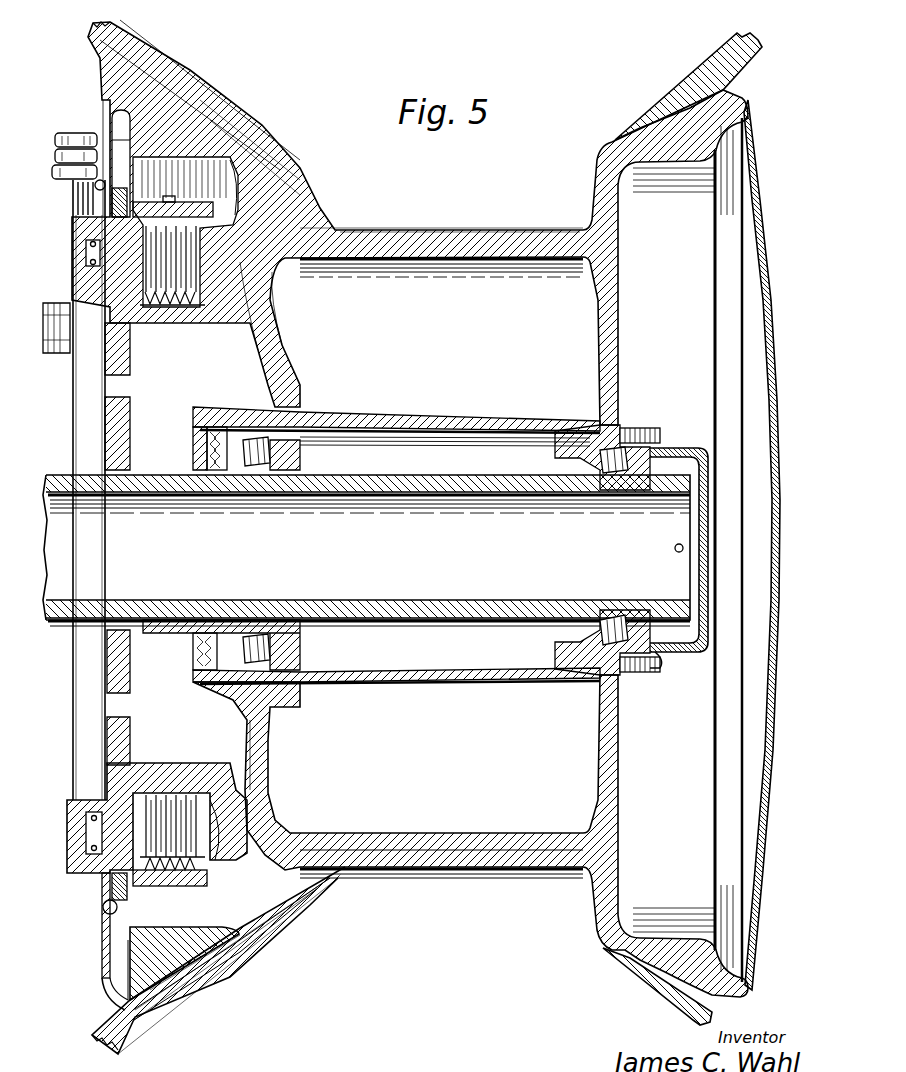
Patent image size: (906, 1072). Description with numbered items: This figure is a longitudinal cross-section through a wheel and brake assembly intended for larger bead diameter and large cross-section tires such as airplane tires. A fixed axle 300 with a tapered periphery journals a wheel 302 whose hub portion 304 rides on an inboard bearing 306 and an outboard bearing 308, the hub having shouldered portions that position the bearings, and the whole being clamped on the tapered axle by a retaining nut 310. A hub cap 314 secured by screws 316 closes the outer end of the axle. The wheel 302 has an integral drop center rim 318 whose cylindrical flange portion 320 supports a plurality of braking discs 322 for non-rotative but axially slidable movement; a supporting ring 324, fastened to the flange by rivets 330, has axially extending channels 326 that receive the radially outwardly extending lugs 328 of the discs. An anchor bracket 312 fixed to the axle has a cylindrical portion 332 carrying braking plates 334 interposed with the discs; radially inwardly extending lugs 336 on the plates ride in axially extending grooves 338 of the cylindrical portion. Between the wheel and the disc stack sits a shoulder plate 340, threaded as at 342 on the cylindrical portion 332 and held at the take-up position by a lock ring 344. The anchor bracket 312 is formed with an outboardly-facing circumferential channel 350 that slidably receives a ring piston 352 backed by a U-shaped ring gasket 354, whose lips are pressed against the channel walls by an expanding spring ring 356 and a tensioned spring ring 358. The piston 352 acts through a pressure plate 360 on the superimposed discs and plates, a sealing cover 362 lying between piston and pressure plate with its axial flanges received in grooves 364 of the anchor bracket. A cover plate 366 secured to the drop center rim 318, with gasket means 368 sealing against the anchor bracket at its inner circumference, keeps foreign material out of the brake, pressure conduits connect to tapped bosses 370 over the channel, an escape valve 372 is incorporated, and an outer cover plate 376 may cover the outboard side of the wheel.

The fixed axle 300 is at (213, 614).
The wheel 302 is at (582, 358).
The hub portion 304 is at (427, 418).
The inboard bearing 306 is at (250, 470).
The outboard bearing 308 is at (615, 618).
The retaining nut 310 is at (662, 660).
The anchor bracket 312 is at (305, 418).
The hub cap 314 is at (668, 447).
The screws 316 is at (655, 428).
The drop center rim 318 is at (497, 245).
The cylindrical flange portion 320 is at (232, 143).
The braking discs 322 is at (183, 795).
The supporting ring 324 is at (237, 160).
The axially extending channels 326 is at (165, 1000).
The radially outwardly extending lugs 328 is at (160, 1010).
The rivets 330 is at (195, 140).
The cylindrical portion 332 is at (172, 322).
The braking plates 334 is at (163, 795).
The radially inwardly extending lugs 336 is at (258, 178).
The axially extending grooves 338 is at (152, 793).
The shoulder plate 340 is at (300, 225).
The threads 342 is at (266, 330).
The lock ring 344 is at (245, 275).
The circumferential outboardly-facing channel 350 is at (75, 874).
The ring piston 352 is at (115, 800).
The ring gasket 354 is at (100, 905).
The expanding spring ring 356 is at (80, 905).
The tensioned spring ring 358 is at (90, 818).
The pressure plate 360 is at (140, 300).
The sealing cover 362 is at (187, 100).
The grooves 364 is at (88, 250).
The cover plate 366 is at (110, 72).
The gasket means 368 is at (112, 205).
The tapped bosses 370 is at (58, 353).
The escape valve 372 is at (55, 168).
The outer cover plate 376 is at (762, 283).